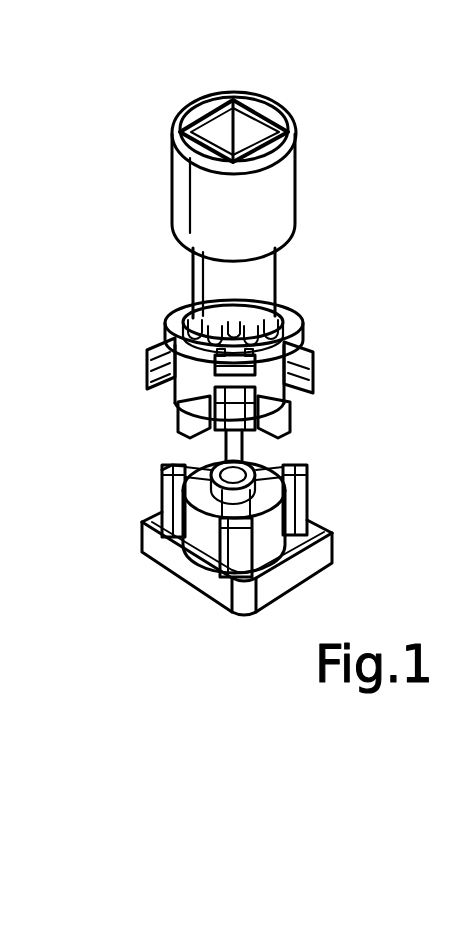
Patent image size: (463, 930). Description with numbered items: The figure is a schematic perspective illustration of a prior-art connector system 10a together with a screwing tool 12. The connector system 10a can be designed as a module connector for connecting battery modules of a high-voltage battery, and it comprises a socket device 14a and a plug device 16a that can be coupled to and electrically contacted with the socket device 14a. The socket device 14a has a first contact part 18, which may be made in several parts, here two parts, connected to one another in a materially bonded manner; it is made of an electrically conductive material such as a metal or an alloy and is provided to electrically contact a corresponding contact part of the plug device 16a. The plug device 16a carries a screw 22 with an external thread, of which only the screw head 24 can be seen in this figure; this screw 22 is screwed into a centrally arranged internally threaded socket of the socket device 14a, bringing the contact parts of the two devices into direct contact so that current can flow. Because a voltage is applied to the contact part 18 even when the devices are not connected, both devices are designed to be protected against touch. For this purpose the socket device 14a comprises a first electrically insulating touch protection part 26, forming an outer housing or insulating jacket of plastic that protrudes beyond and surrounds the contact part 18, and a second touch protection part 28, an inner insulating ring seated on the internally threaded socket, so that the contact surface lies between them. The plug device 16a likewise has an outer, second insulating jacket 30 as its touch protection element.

The screwing tool 12 is at (184, 96).
The plug device 16a is at (300, 304).
The screw 22 is at (185, 310).
The screw head 24 is at (234, 329).
The connector system 10a is at (140, 362).
The second insulating jacket 30 is at (218, 452).
The socket device 14a is at (294, 455).
The second touch protection part 28 is at (308, 471).
The first contact part 18 is at (162, 478).
The first touch protection part 26 is at (323, 543).